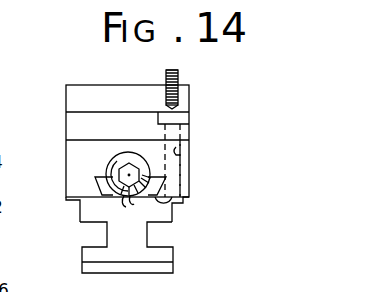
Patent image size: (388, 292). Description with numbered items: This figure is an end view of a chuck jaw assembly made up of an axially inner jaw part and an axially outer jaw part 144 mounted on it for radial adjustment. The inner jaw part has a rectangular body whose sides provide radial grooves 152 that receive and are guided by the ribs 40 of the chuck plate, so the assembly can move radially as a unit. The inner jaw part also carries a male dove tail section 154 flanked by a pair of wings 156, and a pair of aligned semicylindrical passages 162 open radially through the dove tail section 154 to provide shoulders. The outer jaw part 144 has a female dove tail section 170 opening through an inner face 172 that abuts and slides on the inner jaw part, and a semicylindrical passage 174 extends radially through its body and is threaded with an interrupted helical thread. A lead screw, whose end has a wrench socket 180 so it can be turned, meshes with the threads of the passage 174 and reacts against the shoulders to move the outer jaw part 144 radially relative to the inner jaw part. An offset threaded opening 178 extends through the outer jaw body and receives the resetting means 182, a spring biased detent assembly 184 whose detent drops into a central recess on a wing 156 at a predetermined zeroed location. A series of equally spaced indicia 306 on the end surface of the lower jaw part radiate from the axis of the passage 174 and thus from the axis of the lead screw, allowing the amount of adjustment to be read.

The ribs 40 is at (46, 118).
The outer jaw part 144 is at (190, 113).
The radial grooves 152 is at (88, 247).
The male dove tail section 154 is at (183, 190).
The wings 156 is at (76, 201).
The semicylindrical passages 162 is at (126, 200).
The female dove tail section 170 is at (95, 181).
The inner face 172 is at (176, 206).
The semicylindrical passage 174 is at (118, 158).
The offset threaded opening 178 is at (181, 157).
The wrench socket 180 is at (129, 163).
The resetting means 182 is at (180, 77).
The spring biased detent assembly 184 is at (166, 73).
The indicia 306 is at (131, 198).